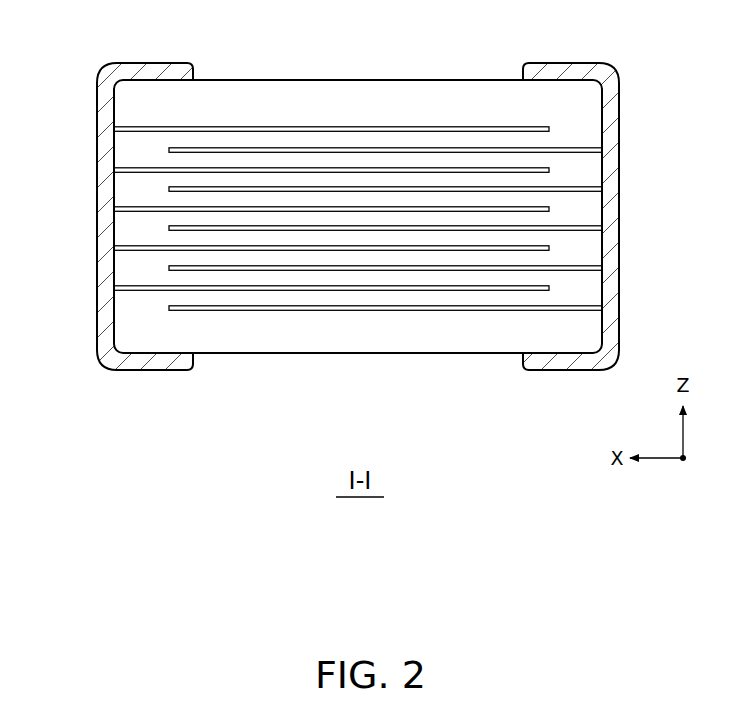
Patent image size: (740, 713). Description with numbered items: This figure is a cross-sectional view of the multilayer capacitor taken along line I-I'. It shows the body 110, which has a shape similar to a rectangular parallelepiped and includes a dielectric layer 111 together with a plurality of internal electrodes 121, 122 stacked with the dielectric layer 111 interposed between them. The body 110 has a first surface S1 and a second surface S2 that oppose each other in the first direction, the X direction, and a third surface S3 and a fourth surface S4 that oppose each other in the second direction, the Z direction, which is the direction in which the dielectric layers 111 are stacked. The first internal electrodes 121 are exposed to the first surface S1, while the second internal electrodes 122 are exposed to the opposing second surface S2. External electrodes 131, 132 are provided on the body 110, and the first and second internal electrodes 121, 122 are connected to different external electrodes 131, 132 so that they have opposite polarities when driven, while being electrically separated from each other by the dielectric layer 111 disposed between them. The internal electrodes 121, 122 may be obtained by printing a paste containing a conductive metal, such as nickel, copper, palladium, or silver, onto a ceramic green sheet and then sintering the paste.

The body 110 is at (285, 76).
The dielectric layer 111 is at (175, 159).
The first internal electrode 121 is at (338, 126).
The second internal electrode 122 is at (395, 147).
The external electrode 131 is at (150, 72).
The external electrode 132 is at (570, 72).
The first surface S1 is at (110, 201).
The second surface S2 is at (608, 202).
The third surface S3 is at (448, 76).
The fourth surface S4 is at (446, 358).